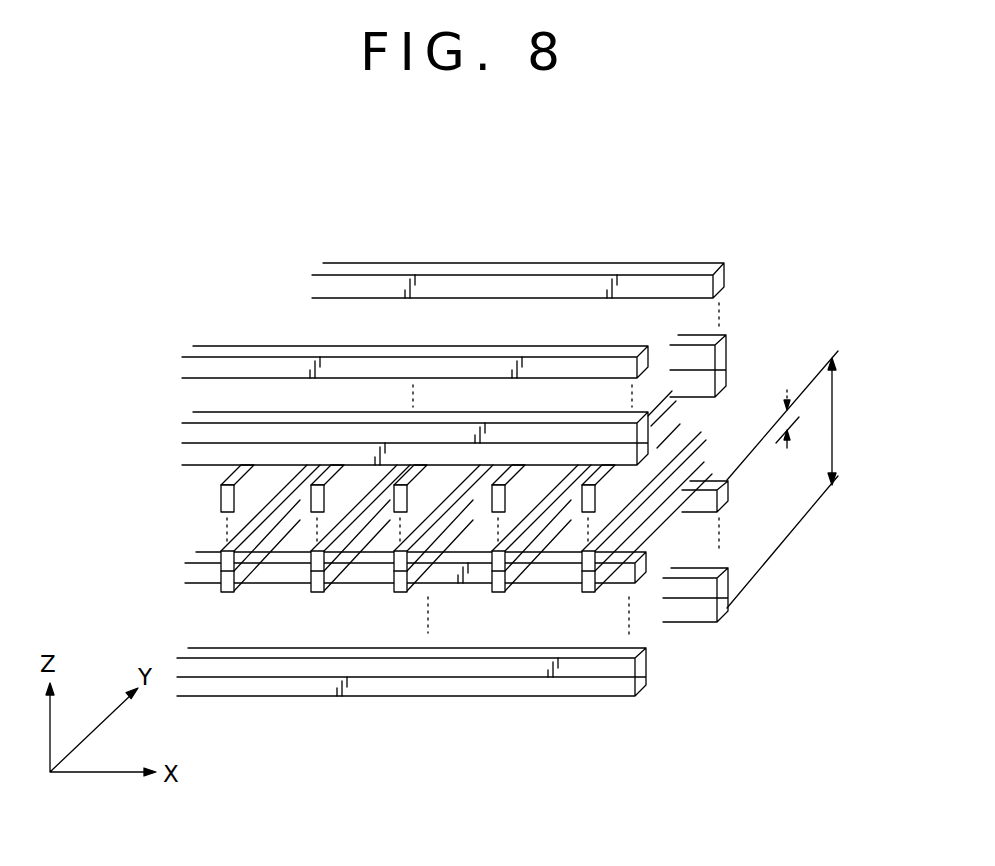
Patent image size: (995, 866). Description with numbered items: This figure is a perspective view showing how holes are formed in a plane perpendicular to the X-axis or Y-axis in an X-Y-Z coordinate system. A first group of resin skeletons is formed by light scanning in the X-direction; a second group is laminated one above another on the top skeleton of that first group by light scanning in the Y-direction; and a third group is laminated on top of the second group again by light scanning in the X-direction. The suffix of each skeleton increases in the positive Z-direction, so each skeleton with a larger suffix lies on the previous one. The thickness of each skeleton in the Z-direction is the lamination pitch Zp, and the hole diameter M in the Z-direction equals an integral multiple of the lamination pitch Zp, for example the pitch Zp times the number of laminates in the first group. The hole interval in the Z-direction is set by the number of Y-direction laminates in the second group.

The hole diameter M is at (783, 479).
The lamination pitch Zp is at (793, 436).